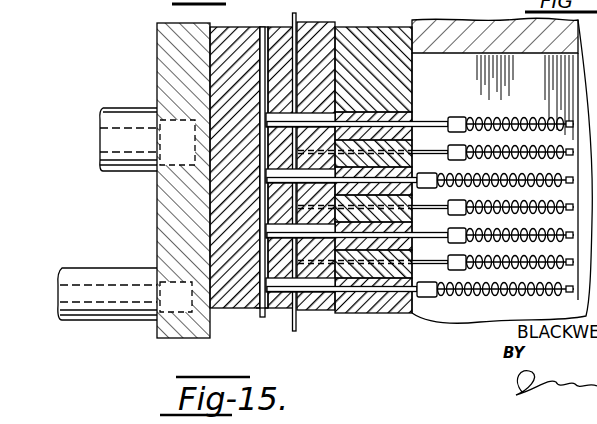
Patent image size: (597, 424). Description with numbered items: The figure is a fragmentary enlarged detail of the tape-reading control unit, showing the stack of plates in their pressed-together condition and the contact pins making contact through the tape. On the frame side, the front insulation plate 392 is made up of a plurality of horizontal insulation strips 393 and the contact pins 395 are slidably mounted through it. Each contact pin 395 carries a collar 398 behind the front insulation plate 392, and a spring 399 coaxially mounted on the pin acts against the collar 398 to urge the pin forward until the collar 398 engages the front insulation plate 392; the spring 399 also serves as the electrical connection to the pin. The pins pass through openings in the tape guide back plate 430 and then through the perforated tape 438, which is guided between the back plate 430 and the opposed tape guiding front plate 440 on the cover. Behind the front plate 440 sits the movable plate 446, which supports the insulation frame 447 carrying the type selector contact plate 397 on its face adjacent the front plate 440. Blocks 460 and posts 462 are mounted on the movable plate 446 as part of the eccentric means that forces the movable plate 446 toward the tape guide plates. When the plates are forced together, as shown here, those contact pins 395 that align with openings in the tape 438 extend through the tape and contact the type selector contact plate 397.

The front insulation plate 392 is at (407, 317).
The horizontal insulation strips 393 is at (368, 312).
The contact pins 395 is at (422, 118).
The type selector contact plate 397 is at (260, 313).
The collar 398 is at (470, 106).
The springs 399 is at (528, 120).
The tape guide back plate 430 is at (303, 313).
The perforated tape 438 is at (296, 13).
The tape guiding front plate 440 is at (275, 310).
The movable plate 446 is at (170, 47).
The insulation frame 447 is at (226, 29).
The blocks 460 is at (125, 108).
The posts 462 is at (108, 267).